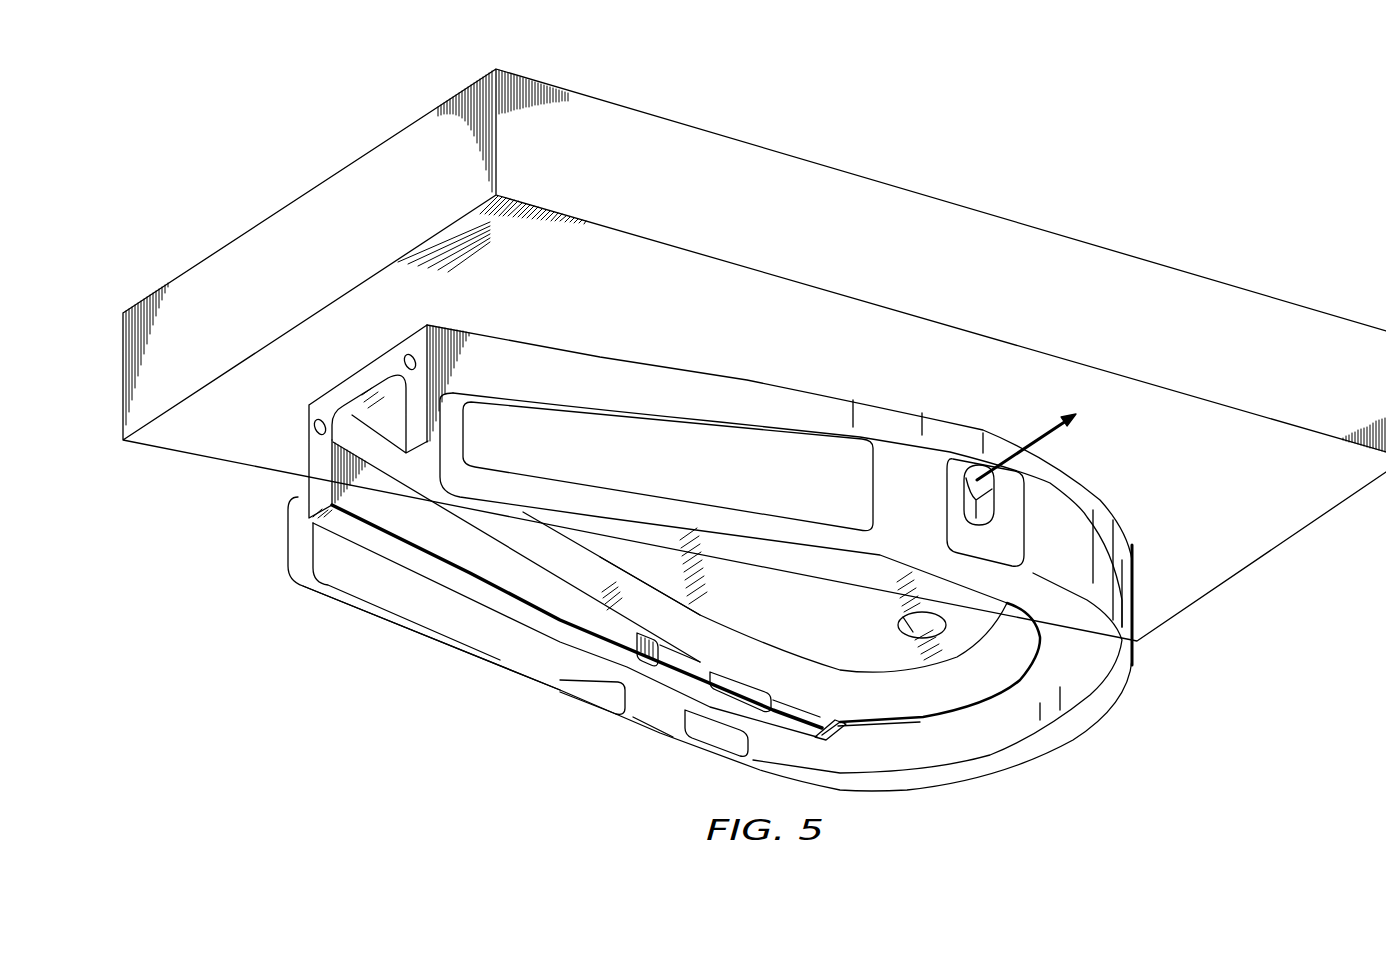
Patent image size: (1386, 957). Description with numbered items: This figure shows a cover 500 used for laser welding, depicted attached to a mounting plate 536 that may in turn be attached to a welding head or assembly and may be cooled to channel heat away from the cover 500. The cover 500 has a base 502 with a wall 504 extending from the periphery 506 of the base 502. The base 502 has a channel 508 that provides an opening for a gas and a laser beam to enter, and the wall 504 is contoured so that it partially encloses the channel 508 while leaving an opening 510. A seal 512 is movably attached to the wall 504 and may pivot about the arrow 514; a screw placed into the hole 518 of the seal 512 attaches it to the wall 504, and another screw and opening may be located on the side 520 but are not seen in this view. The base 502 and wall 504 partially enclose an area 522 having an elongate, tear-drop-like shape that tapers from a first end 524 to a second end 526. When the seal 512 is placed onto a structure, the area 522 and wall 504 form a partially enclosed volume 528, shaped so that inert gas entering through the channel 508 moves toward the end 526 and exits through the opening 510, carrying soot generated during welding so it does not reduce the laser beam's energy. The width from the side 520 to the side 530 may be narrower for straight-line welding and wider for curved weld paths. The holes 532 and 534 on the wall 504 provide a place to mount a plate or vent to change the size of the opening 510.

The cover 500 is at (998, 803).
The base 502 is at (727, 371).
The wall 504 is at (396, 508).
The periphery 506 is at (608, 356).
The channel 508 is at (898, 625).
The opening 510 is at (346, 410).
The seal 512 is at (590, 722).
The arrow 514 is at (1040, 428).
The hole 518 is at (962, 494).
The side 520 is at (446, 612).
The area 522 is at (827, 606).
The end 524 is at (1100, 642).
The end 526 is at (318, 476).
The partially enclosed volume 528 is at (640, 552).
The side 530 is at (517, 430).
The hole 532 is at (318, 436).
The hole 534 is at (408, 354).
The mounting plate 536 is at (972, 281).